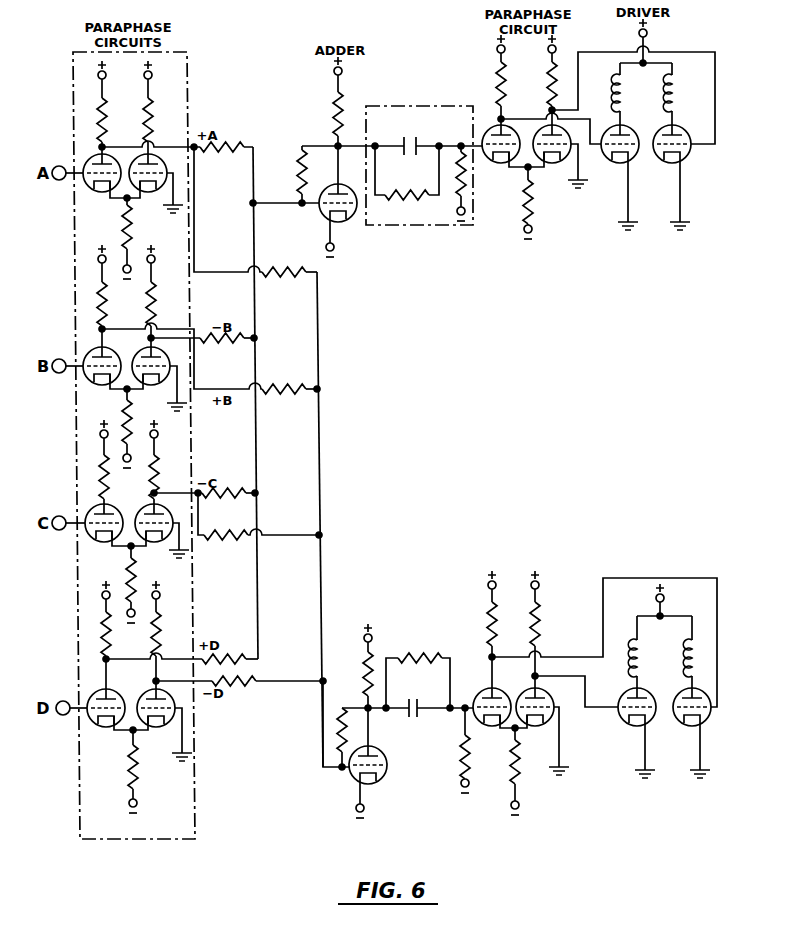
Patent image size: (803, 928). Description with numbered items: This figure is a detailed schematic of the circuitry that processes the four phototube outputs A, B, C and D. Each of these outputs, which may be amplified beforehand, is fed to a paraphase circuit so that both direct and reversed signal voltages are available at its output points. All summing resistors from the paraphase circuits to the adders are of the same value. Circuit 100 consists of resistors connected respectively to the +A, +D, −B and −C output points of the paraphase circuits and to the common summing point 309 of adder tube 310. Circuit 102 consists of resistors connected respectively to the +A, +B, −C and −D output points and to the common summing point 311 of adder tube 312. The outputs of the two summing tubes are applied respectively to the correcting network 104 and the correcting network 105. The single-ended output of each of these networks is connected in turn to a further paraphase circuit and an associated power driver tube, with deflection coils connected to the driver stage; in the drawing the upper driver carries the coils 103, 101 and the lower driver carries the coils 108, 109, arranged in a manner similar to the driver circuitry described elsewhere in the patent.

The circuit 100 is at (253, 453).
The circuit 102 is at (320, 453).
The common summing point 309 is at (251, 203).
The adder tube 310 is at (324, 214).
The correcting network 104 is at (430, 131).
The driver plate inductor 103 is at (616, 95).
The driver plate inductor 101 is at (677, 93).
The correcting network 105 is at (405, 656).
The common summing point 311 is at (320, 684).
The adder tube 312 is at (377, 782).
The driver plate inductor 108 is at (630, 668).
The driver plate inductor 109 is at (697, 668).